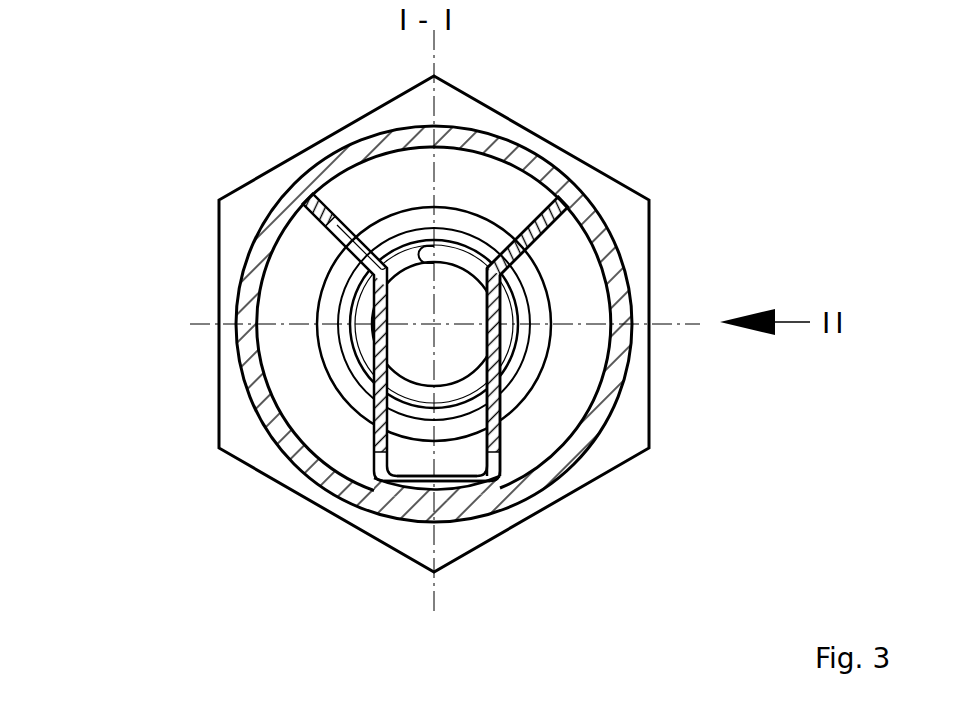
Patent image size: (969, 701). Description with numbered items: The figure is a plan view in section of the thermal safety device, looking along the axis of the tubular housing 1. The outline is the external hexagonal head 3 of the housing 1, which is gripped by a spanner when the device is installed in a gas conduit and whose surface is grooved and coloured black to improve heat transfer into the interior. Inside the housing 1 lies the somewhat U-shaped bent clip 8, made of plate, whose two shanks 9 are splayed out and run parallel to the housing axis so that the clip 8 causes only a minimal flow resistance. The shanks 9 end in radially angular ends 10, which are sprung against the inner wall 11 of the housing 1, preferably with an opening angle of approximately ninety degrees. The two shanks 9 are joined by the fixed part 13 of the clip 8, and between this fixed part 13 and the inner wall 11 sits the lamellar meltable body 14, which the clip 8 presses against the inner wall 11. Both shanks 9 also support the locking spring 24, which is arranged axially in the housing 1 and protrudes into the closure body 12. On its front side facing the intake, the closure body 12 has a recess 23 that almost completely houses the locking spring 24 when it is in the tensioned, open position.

The housing 1 is at (555, 182).
The hexagonal head 3 is at (628, 203).
The clip 8 is at (559, 285).
The shanks 9 is at (497, 410).
The angular ends 10 is at (548, 213).
The inner wall 11 is at (605, 278).
The closure body 12 is at (392, 226).
The fixed part 13 is at (445, 483).
The meltable body 14 is at (412, 495).
The recess 23 is at (400, 295).
The locking spring 24 is at (365, 327).